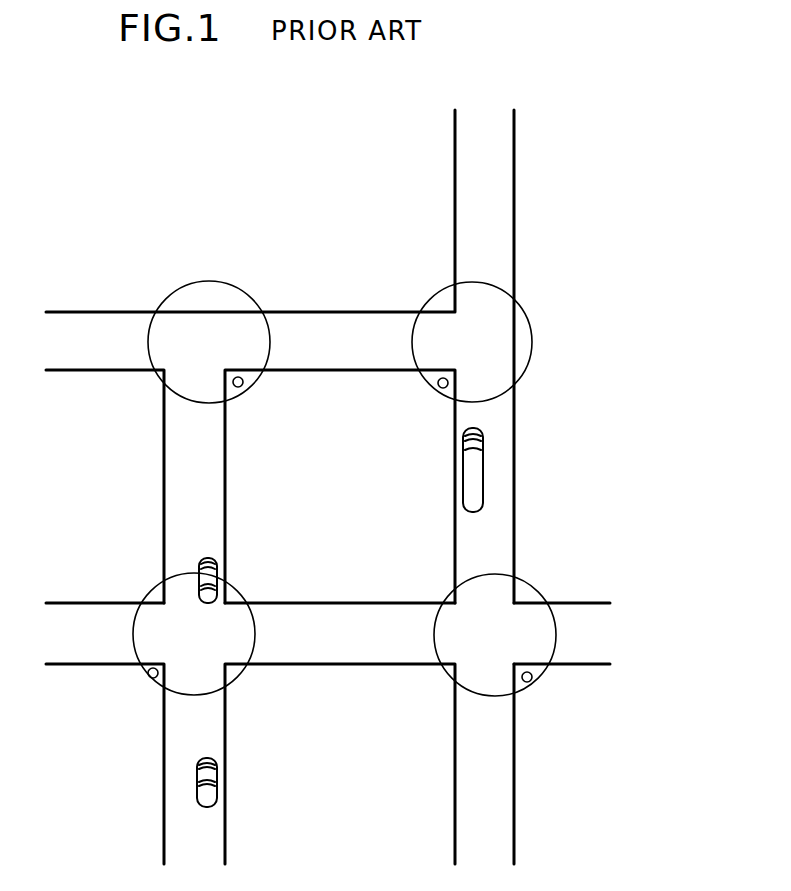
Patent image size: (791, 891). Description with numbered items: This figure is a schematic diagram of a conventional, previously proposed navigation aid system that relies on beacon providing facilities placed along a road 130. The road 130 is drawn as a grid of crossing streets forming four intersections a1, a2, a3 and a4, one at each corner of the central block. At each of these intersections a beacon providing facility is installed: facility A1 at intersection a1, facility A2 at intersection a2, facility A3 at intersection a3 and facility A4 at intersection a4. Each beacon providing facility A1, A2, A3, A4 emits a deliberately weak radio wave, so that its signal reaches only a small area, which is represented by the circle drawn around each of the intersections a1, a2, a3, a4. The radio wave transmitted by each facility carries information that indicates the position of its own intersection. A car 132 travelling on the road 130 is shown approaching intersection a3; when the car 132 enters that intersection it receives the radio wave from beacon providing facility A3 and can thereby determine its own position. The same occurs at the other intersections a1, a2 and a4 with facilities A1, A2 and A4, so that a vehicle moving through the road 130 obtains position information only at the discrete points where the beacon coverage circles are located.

The road 130 is at (500, 229).
The car 132 is at (208, 557).
The intersection a1 is at (516, 300).
The intersection a2 is at (233, 284).
The intersection a3 is at (237, 588).
The intersection a4 is at (525, 582).
The beacon providing facility A1 is at (437, 389).
The beacon providing facility A2 is at (243, 387).
The beacon providing facility A3 is at (150, 678).
The beacon providing facility A4 is at (532, 682).